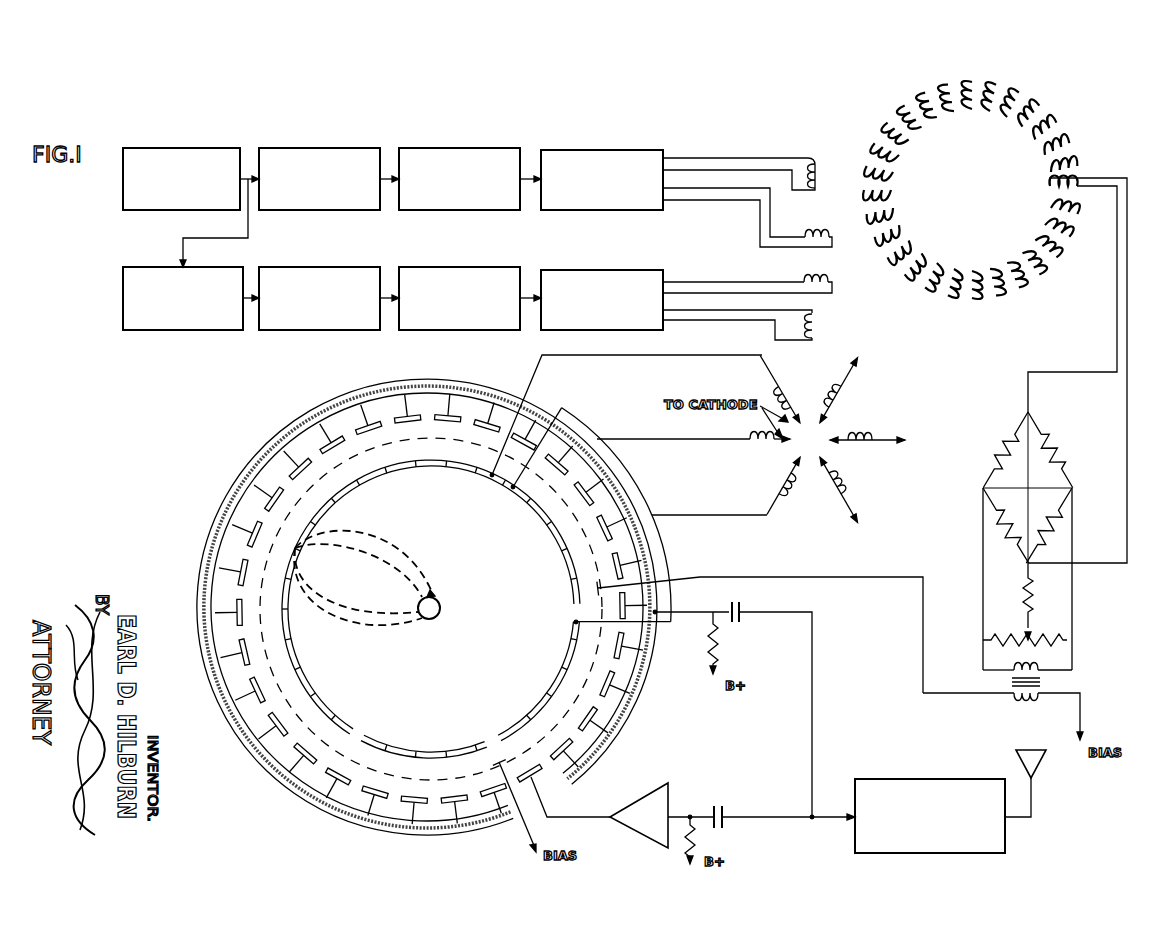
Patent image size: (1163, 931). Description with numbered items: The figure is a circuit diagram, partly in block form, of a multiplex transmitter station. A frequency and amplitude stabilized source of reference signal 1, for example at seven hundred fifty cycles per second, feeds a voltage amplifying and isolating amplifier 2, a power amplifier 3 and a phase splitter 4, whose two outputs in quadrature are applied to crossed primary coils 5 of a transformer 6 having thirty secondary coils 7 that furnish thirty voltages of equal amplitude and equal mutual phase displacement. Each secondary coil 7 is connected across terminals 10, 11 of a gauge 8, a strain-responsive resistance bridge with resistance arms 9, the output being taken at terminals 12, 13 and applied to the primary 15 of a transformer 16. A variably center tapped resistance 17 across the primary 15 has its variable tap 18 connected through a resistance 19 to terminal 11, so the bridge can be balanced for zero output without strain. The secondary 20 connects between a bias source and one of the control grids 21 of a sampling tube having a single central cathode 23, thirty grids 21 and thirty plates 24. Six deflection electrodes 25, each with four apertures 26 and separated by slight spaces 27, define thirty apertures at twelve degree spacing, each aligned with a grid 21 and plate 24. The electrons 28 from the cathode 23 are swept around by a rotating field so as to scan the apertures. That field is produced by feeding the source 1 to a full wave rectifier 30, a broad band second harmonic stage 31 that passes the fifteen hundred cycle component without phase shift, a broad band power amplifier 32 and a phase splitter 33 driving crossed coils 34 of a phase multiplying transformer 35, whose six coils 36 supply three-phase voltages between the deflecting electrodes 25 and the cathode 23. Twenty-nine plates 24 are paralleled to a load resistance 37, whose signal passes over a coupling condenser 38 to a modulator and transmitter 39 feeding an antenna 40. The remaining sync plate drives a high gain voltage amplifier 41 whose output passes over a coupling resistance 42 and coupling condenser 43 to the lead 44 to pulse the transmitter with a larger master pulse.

The source of reference signal 1 is at (188, 148).
The voltage amplifying and isolating amplifier 2 is at (325, 148).
The power amplifier 3 is at (465, 148).
The phase splitter 4 is at (608, 150).
The crossed primary coils 5 is at (816, 192).
The transformer 6 is at (972, 190).
The secondary coils 7 is at (898, 152).
The gauge 8 is at (1034, 539).
The resistance arms 9 is at (1027, 487).
The bridge terminal 10 is at (1033, 414).
The bridge terminal 11 is at (1026, 562).
The bridge output terminal 12 is at (983, 488).
The bridge output terminal 13 is at (1072, 488).
The primary 15 is at (1043, 675).
The transformer 16 is at (1012, 702).
The variably center tapped resistance 17 is at (1042, 636).
The variable tap 18 is at (1026, 634).
The resistance 19 is at (1042, 601).
The secondary 20 is at (1032, 700).
The control grids 21 is at (418, 447).
The cathode 23 is at (440, 617).
The plates 24 is at (432, 420).
The deflection electrodes 25 is at (440, 612).
The apertures 26 is at (532, 530).
The spaces 27 is at (440, 612).
The electrons 28 is at (366, 578).
The full wave rectifier 30 is at (175, 330).
The second harmonic filter stage 31 is at (312, 330).
The broad band power amplifier 32 is at (438, 330).
The phase splitter 33 is at (625, 330).
The crossed coils 34 is at (828, 286).
The phase multiplying transformer 35 is at (751, 439).
The coils 36 is at (777, 487).
The load resistance 37 is at (726, 643).
The coupling condenser 38 is at (733, 701).
The modulator and transmitter 39 is at (930, 779).
The antenna 40 is at (1038, 762).
The high gain voltage amplifier 41 is at (668, 800).
The coupling resistance 42 is at (697, 834).
The coupling condenser 43 is at (724, 806).
The lead 44 is at (772, 820).